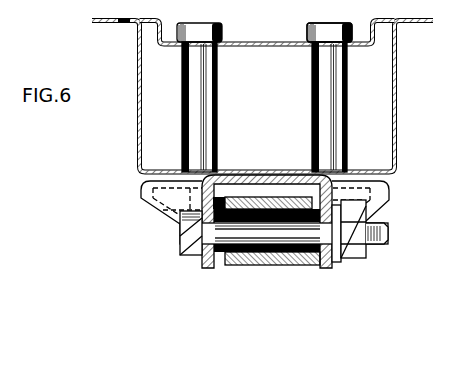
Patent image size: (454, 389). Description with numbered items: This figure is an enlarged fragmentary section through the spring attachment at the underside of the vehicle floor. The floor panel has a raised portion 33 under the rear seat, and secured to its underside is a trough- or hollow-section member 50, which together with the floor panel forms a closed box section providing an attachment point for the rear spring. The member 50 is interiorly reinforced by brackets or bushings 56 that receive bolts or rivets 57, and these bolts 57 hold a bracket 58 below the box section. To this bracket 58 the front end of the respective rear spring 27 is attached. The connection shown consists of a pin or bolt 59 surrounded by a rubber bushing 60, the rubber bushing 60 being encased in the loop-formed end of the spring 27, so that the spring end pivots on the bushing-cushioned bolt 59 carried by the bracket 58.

The rear spring 27 is at (267, 203).
The raised portion 33 is at (393, 16).
The hollow-section member 50 is at (397, 66).
The bushing 56 is at (218, 70).
The bolt 57 is at (333, 25).
The bracket 58 is at (389, 192).
The bolt 59 is at (220, 230).
The rubber bushing 60 is at (286, 262).